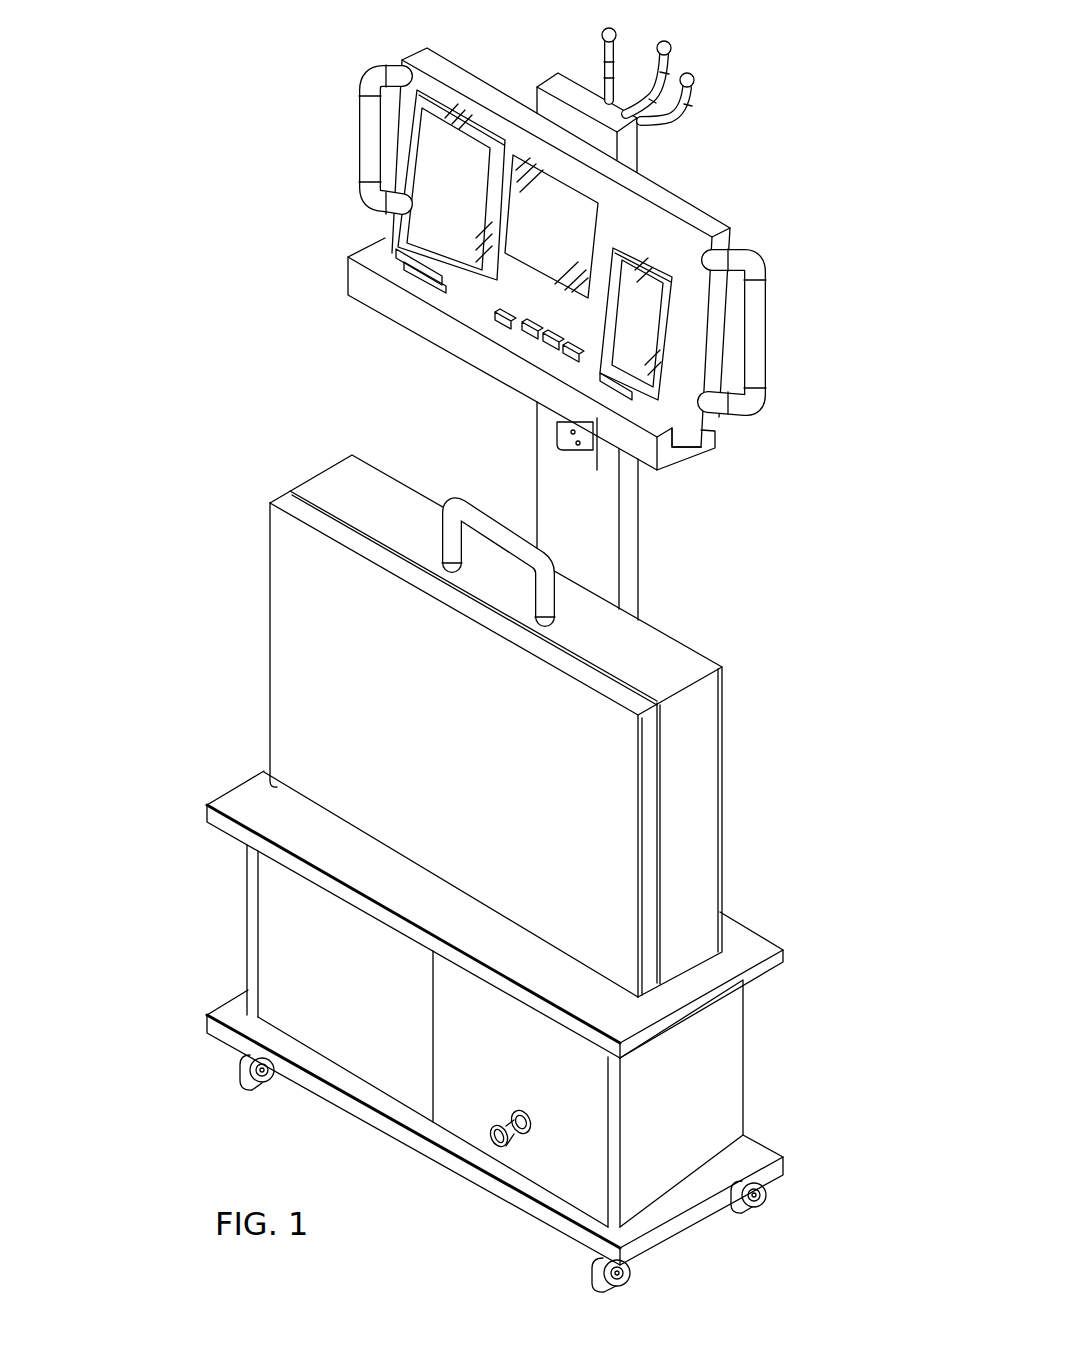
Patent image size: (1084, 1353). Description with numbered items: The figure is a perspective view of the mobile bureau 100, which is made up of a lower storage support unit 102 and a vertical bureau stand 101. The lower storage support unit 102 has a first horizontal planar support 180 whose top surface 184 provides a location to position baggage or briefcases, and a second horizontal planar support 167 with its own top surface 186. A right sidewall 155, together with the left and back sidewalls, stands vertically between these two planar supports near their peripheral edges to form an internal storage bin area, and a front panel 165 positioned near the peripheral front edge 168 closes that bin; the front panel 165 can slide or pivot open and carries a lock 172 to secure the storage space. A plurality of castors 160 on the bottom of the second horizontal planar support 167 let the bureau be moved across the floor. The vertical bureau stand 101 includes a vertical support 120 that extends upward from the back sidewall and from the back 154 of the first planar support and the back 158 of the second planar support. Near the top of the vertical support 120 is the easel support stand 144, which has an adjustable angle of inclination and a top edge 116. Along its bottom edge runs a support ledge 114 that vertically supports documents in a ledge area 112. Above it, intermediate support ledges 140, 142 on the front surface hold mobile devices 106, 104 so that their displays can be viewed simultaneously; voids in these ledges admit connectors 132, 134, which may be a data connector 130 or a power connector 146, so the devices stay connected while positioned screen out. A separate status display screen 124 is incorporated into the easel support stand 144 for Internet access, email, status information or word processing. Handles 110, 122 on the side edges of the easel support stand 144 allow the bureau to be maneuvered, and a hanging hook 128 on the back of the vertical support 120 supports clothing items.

The mobile bureau 100 is at (810, 143).
The vertical bureau stand 101 is at (318, 170).
The lower storage support unit 102 is at (218, 921).
The mobile device 104 is at (635, 264).
The mobile device 106 is at (470, 203).
The handle 110 is at (767, 358).
The ledge area 112 is at (712, 446).
The support ledge 114 is at (350, 258).
The top edge 116 is at (708, 215).
The vertical support 120 is at (640, 148).
The handle 122 is at (358, 127).
The status display screen 124 is at (566, 238).
The hanging hook 128 is at (672, 48).
The data connector 130 is at (531, 355).
The connector 132 is at (440, 288).
The connector 134 is at (607, 432).
The intermediate support ledge 140 is at (392, 250).
The intermediate support ledge 142 is at (600, 372).
The easel support stand 144 is at (734, 240).
The power connector 146 is at (556, 430).
The back of first planar support 154 is at (784, 955).
The right sidewall 155 is at (735, 1078).
The back of second planar support 158 is at (785, 1163).
The castor 160 is at (236, 1064).
The front panel 165 is at (565, 1168).
The second horizontal planar support 167 is at (692, 1218).
The peripheral front edge 168 is at (392, 1117).
The lock 172 is at (520, 1115).
The first horizontal planar support 180 is at (745, 981).
The top surface 184 is at (264, 782).
The top surface 186 is at (238, 1002).